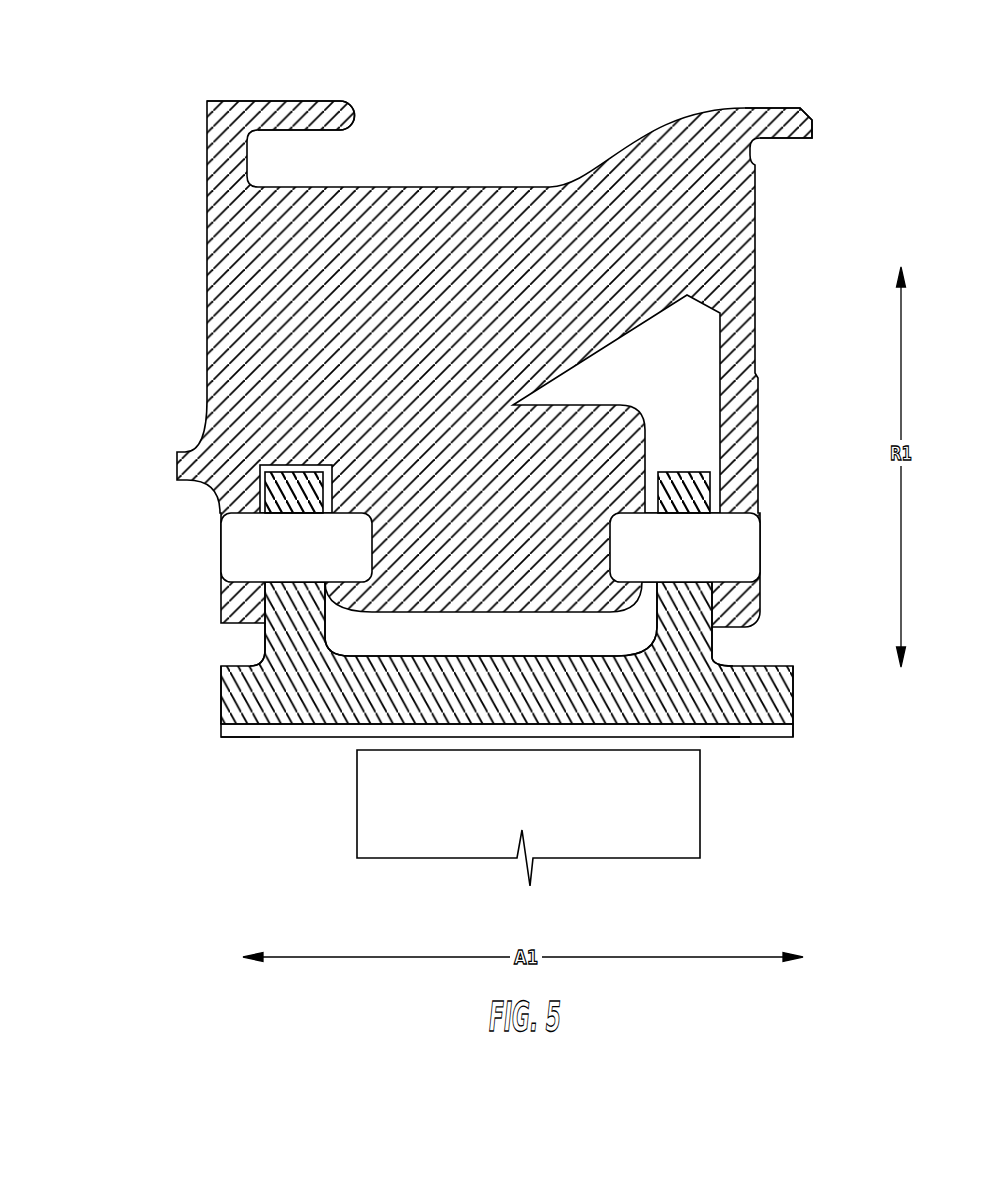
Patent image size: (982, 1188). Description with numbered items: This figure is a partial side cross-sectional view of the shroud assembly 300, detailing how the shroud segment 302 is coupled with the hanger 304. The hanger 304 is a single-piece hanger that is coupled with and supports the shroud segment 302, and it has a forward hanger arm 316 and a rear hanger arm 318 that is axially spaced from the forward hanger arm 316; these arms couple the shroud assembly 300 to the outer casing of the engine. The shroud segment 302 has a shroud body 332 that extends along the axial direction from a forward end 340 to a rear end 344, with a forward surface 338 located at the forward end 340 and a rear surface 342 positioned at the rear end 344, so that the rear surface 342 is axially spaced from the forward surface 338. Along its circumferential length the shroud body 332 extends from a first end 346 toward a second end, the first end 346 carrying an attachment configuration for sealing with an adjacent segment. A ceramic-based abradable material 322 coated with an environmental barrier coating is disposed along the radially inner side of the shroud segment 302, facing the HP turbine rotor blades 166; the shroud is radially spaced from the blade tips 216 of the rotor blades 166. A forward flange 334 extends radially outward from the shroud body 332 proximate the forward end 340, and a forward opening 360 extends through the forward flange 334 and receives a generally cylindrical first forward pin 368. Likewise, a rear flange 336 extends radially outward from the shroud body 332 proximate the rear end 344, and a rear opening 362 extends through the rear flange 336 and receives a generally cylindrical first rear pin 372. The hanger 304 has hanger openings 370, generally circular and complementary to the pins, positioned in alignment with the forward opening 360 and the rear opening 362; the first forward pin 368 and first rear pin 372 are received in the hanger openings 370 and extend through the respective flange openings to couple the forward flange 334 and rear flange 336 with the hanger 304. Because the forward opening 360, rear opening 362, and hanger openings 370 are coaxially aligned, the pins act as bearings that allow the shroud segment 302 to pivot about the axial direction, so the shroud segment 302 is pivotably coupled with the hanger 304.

The shroud assembly 300 is at (445, 445).
The forward hanger arm 316 is at (320, 102).
The rear hanger arm 318 is at (792, 106).
The hanger 304 is at (757, 193).
The hanger openings 370 is at (284, 493).
The rear opening 362 is at (697, 492).
The first end 346 is at (445, 445).
The forward opening 360 is at (242, 492).
The first forward pin 368 is at (270, 561).
The first rear pin 372 is at (666, 561).
The forward flange 334 is at (283, 608).
The rear flange 336 is at (692, 602).
The shroud segment 302 is at (243, 655).
The rear surface 342 is at (814, 698).
The forward surface 338 is at (202, 688).
The shroud body 332 is at (388, 690).
The forward end 340 is at (236, 772).
The rear end 344 is at (794, 757).
The blade tips 216 is at (726, 748).
The ceramic-based abradable material 322 is at (757, 737).
The HP turbine rotor blades 166 is at (595, 815).